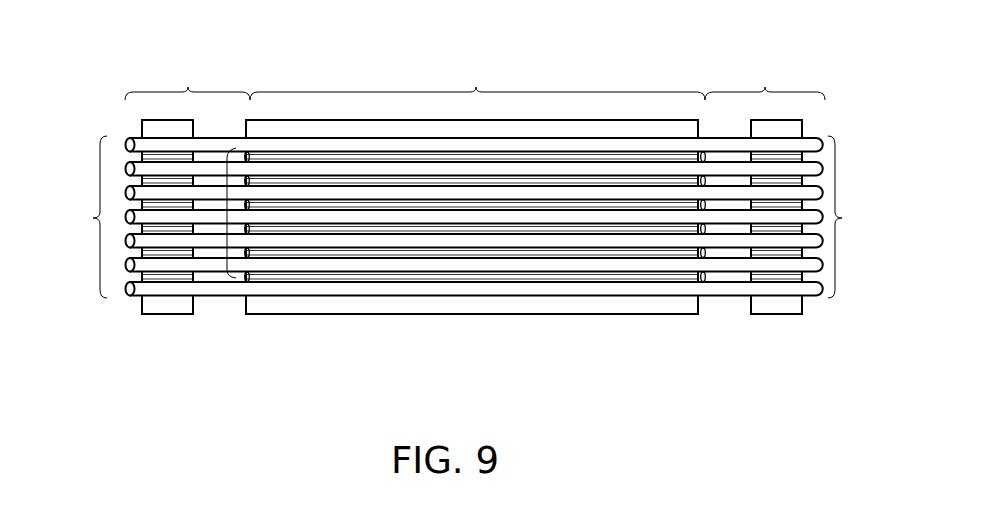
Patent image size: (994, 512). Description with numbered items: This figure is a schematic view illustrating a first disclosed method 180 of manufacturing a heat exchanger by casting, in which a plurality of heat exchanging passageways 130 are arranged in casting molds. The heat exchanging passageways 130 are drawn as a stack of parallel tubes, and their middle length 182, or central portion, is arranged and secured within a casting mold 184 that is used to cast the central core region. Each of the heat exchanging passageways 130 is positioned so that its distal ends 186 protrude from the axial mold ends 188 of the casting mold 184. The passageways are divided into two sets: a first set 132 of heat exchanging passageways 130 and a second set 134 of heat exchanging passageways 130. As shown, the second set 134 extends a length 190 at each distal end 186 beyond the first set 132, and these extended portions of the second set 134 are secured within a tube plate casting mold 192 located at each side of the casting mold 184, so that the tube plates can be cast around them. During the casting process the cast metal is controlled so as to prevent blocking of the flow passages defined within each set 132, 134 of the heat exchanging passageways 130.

The heat exchanging passageways 130 is at (453, 285).
The first set of heat exchanging passageways 132 is at (223, 216).
The second set of heat exchanging passageways 134 is at (93, 218).
The first disclosed method 180 is at (143, 63).
The middle length 182 is at (476, 90).
The casting mold 184 is at (541, 306).
The distal ends 186 is at (128, 291).
The axial mold ends 188 is at (287, 306).
The length 190 is at (188, 90).
The tube plate casting mold 192 is at (160, 308).